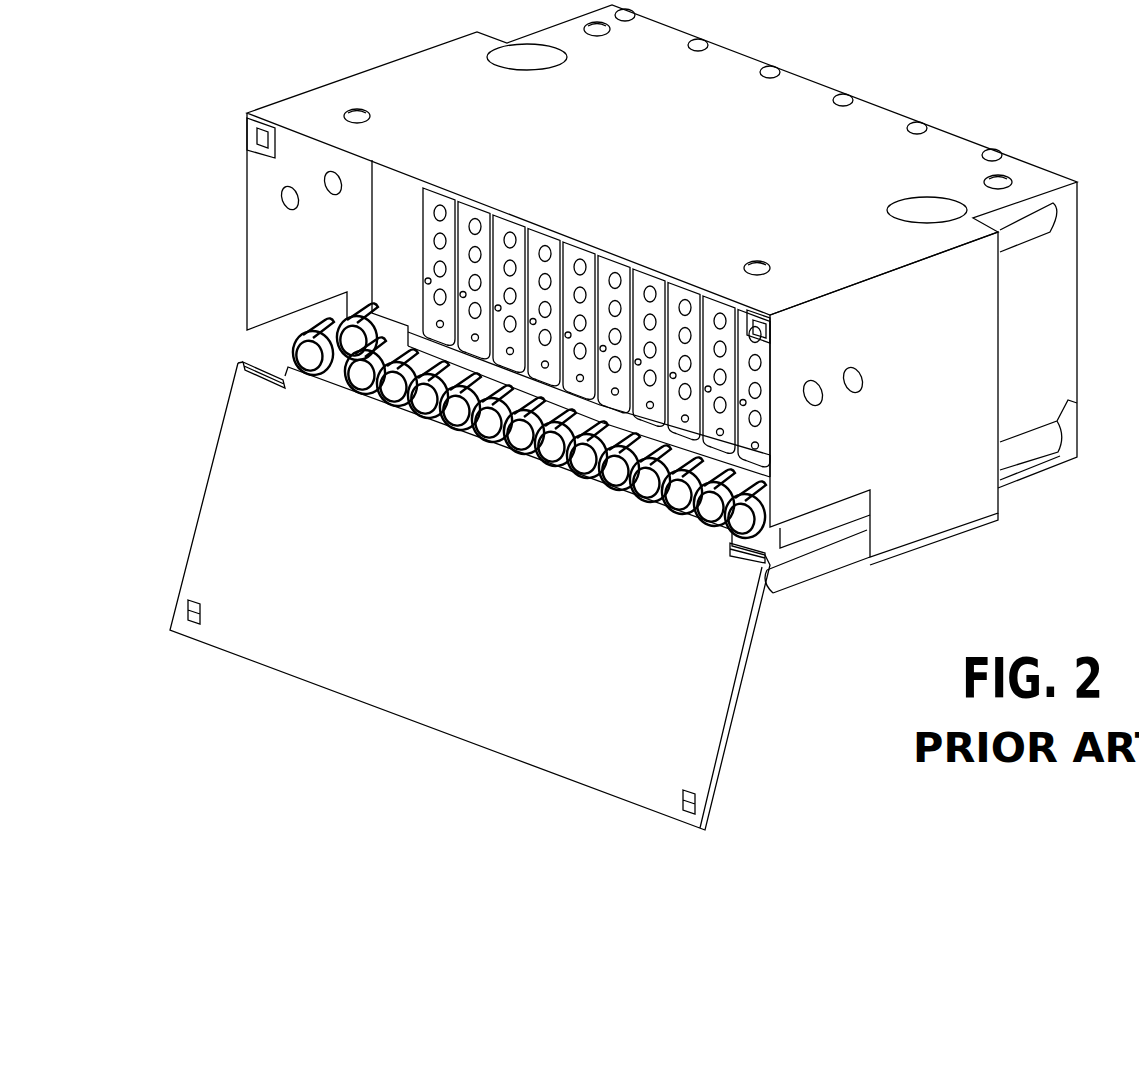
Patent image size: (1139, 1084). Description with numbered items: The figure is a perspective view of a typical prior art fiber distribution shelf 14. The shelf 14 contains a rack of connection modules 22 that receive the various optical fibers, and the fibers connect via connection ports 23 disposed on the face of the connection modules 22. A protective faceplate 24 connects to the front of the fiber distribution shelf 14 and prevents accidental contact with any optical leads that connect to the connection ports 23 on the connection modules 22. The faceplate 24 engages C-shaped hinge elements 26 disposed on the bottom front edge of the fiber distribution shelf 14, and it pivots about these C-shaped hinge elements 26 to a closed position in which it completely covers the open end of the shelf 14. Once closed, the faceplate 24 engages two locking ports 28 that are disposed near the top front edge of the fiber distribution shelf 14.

The fiber distribution shelf 14 is at (940, 155).
The connection modules 22 is at (465, 260).
The connection ports 23 is at (605, 257).
The protective faceplate 24 is at (718, 690).
The C-shaped hinge elements 26 is at (240, 363).
The locking ports 28 is at (250, 130).